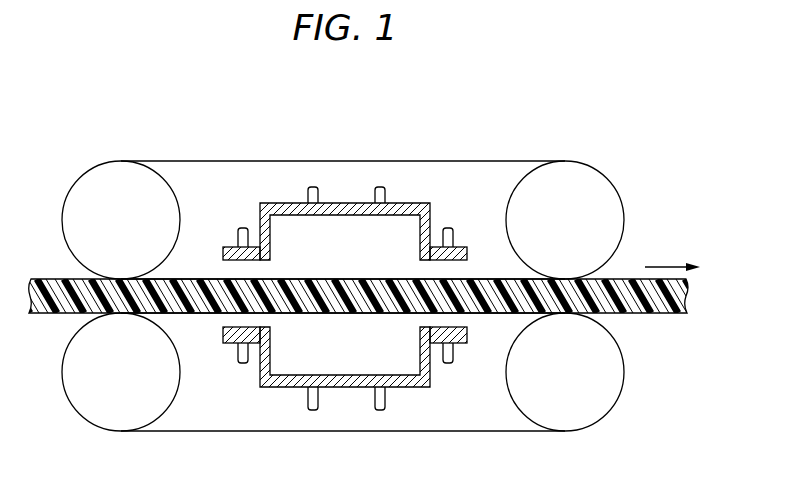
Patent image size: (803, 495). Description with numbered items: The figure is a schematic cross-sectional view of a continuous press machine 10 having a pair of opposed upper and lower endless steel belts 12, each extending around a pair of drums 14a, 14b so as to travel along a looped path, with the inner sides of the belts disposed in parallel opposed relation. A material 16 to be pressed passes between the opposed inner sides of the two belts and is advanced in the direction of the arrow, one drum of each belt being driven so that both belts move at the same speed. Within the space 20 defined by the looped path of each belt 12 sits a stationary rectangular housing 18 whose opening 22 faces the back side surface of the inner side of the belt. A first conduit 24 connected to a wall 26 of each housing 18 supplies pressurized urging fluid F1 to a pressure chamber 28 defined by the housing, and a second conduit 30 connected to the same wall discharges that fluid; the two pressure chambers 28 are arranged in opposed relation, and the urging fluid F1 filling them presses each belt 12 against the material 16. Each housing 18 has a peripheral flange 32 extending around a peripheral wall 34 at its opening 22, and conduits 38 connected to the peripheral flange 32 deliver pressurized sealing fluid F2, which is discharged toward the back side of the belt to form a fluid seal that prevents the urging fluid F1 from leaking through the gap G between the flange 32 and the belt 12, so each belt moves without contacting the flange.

The continuous press machine 10 is at (503, 82).
The endless steel belt 12 is at (530, 160).
The drum 14a is at (603, 190).
The drum 14b is at (108, 172).
The material 16 is at (60, 316).
The housing 18 is at (427, 203).
The space 20 is at (204, 266).
The opening 22 is at (300, 261).
The first conduit 24 is at (369, 190).
The wall 26 is at (346, 208).
The pressure chamber 28 is at (368, 244).
The second conduit 30 is at (305, 186).
The peripheral flange 32 is at (236, 246).
The peripheral wall 34 is at (268, 210).
The conduit 38 is at (237, 230).
The gap G is at (232, 267).
The pressurized urging fluid F1 is at (313, 168).
The pressurized sealing fluid F2 is at (243, 218).